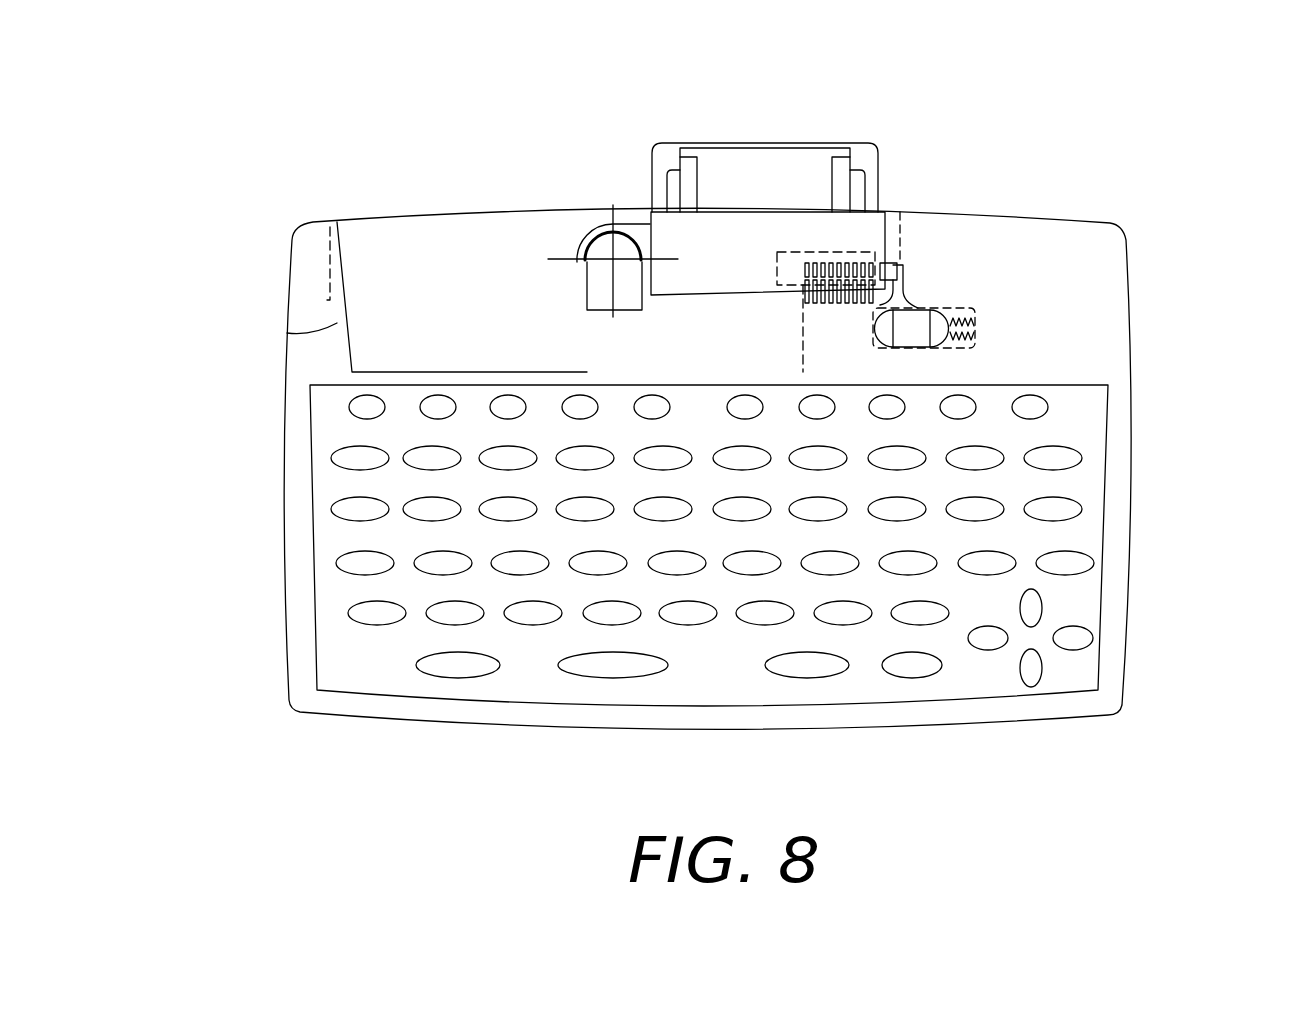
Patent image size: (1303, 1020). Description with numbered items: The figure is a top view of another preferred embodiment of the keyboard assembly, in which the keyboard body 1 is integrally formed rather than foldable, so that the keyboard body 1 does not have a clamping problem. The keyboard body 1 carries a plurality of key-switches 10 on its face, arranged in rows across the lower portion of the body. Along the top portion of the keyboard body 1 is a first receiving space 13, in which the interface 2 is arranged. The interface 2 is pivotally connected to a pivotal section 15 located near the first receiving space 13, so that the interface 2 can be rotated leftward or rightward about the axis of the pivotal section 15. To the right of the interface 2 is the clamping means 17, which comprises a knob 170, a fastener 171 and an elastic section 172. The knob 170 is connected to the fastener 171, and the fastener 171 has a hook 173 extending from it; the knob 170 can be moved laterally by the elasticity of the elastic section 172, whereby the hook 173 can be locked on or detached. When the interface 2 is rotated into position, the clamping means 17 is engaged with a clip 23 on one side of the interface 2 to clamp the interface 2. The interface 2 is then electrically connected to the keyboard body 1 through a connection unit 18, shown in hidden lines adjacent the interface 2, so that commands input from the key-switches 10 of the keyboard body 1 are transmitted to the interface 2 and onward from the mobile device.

The keyboard body 1 is at (1193, 188).
The interface 2 is at (728, 188).
The key-switches 10 is at (1063, 511).
The first receiving space 13 is at (287, 333).
The pivotal section 15 is at (602, 248).
The clamping means 17 is at (983, 238).
The connection unit 18 is at (803, 267).
The clip 23 is at (888, 288).
The knob 170 is at (913, 343).
The fastener 171 is at (905, 273).
The elastic section 172 is at (977, 327).
The hook 173 is at (879, 262).